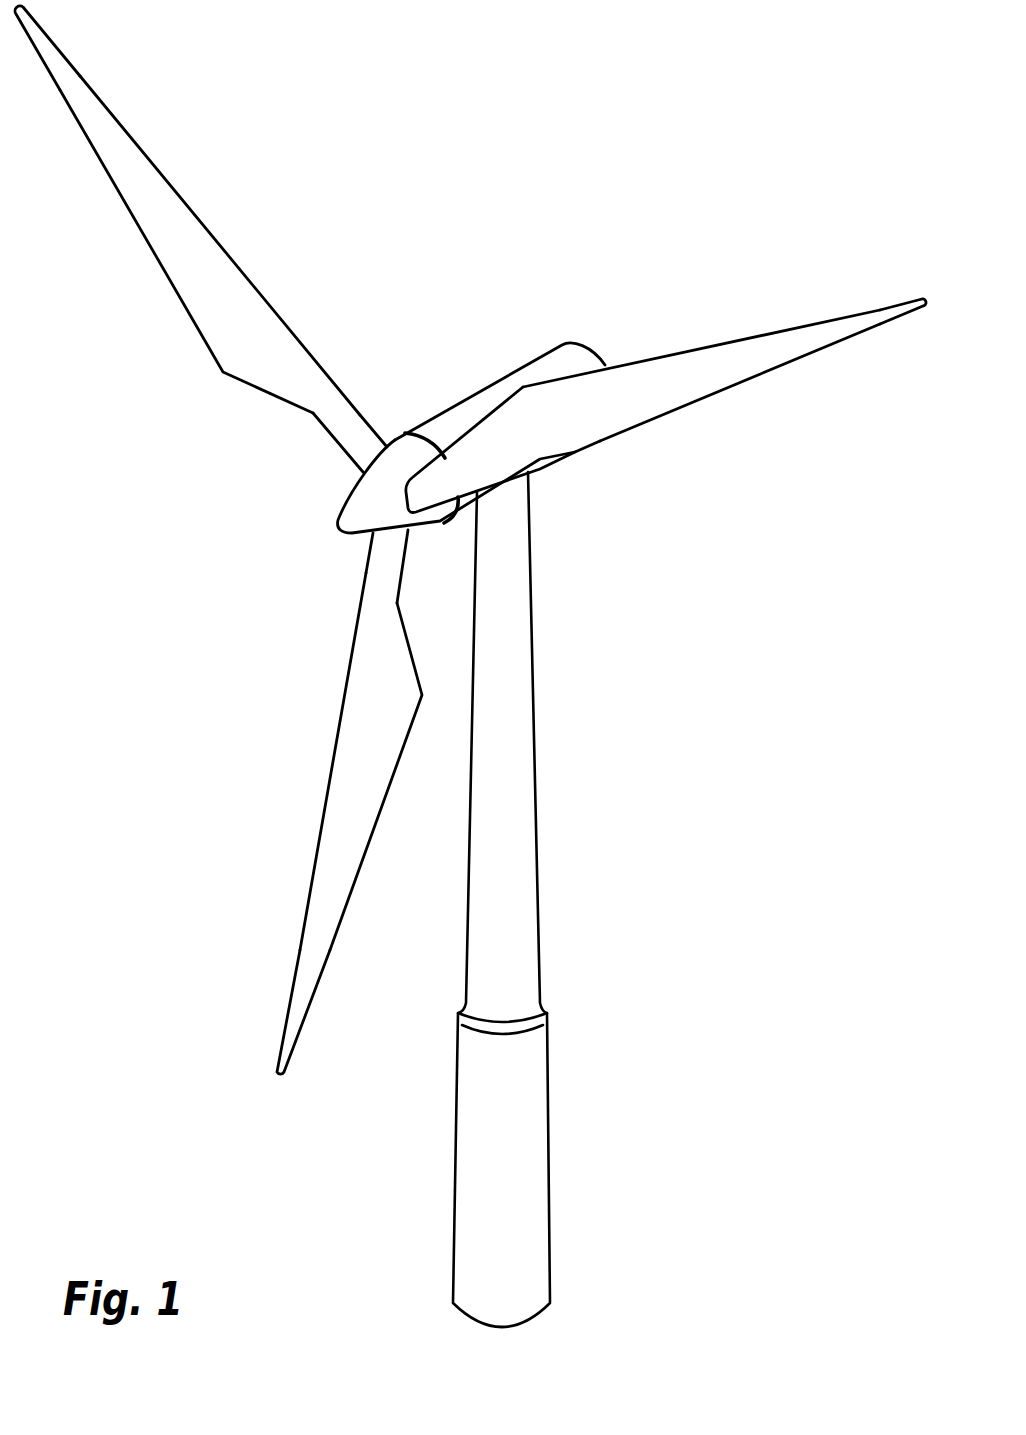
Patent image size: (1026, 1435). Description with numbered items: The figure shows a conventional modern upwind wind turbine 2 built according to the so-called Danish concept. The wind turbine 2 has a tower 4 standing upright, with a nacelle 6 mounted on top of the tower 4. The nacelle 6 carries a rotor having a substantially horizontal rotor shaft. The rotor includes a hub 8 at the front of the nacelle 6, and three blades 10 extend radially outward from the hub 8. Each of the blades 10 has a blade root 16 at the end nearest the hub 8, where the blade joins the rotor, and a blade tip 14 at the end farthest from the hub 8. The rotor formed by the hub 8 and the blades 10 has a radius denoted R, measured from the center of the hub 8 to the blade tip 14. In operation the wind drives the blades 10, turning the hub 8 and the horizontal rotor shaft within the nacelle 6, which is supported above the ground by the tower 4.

The wind turbine 2 is at (660, 830).
The tower 4 is at (522, 745).
The nacelle 6 is at (460, 412).
The hub 8 is at (357, 507).
The blades 10 is at (233, 340).
The blade tip 14 is at (62, 72).
The blade root 16 is at (367, 457).